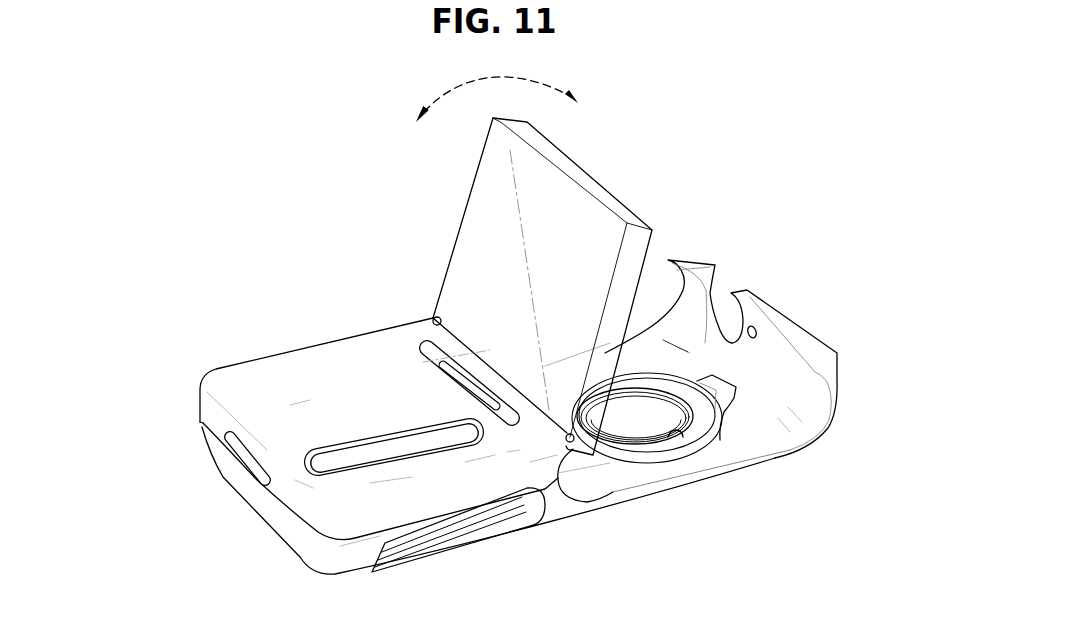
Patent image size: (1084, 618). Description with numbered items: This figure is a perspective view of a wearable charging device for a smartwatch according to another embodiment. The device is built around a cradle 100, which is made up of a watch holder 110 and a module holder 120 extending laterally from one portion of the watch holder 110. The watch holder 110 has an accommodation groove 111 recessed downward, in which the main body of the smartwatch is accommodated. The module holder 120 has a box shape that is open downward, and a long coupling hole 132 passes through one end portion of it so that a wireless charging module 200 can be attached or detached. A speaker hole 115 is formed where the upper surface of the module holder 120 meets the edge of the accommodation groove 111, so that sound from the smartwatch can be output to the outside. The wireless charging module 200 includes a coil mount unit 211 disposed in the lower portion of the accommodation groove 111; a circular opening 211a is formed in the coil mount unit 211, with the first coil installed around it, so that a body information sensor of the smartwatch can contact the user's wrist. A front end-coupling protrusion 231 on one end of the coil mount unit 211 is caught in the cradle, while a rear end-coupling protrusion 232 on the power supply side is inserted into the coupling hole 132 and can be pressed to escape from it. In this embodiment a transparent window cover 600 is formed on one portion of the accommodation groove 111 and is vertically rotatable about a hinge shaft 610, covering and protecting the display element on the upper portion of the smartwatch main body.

The cradle 100 is at (333, 332).
The watch holder 110 is at (770, 318).
The accommodation groove 111 is at (671, 345).
The speaker hole 115 is at (425, 345).
The module holder 120 is at (292, 357).
The coupling hole 132 is at (224, 434).
The wireless charging module 200 is at (261, 518).
The coil mount unit 211 is at (628, 460).
The opening 211a is at (677, 440).
The front end-coupling protrusion 231 is at (733, 450).
The rear end-coupling protrusion 232 is at (243, 453).
The window cover 600 is at (622, 187).
The hinge shaft 610 is at (569, 452).